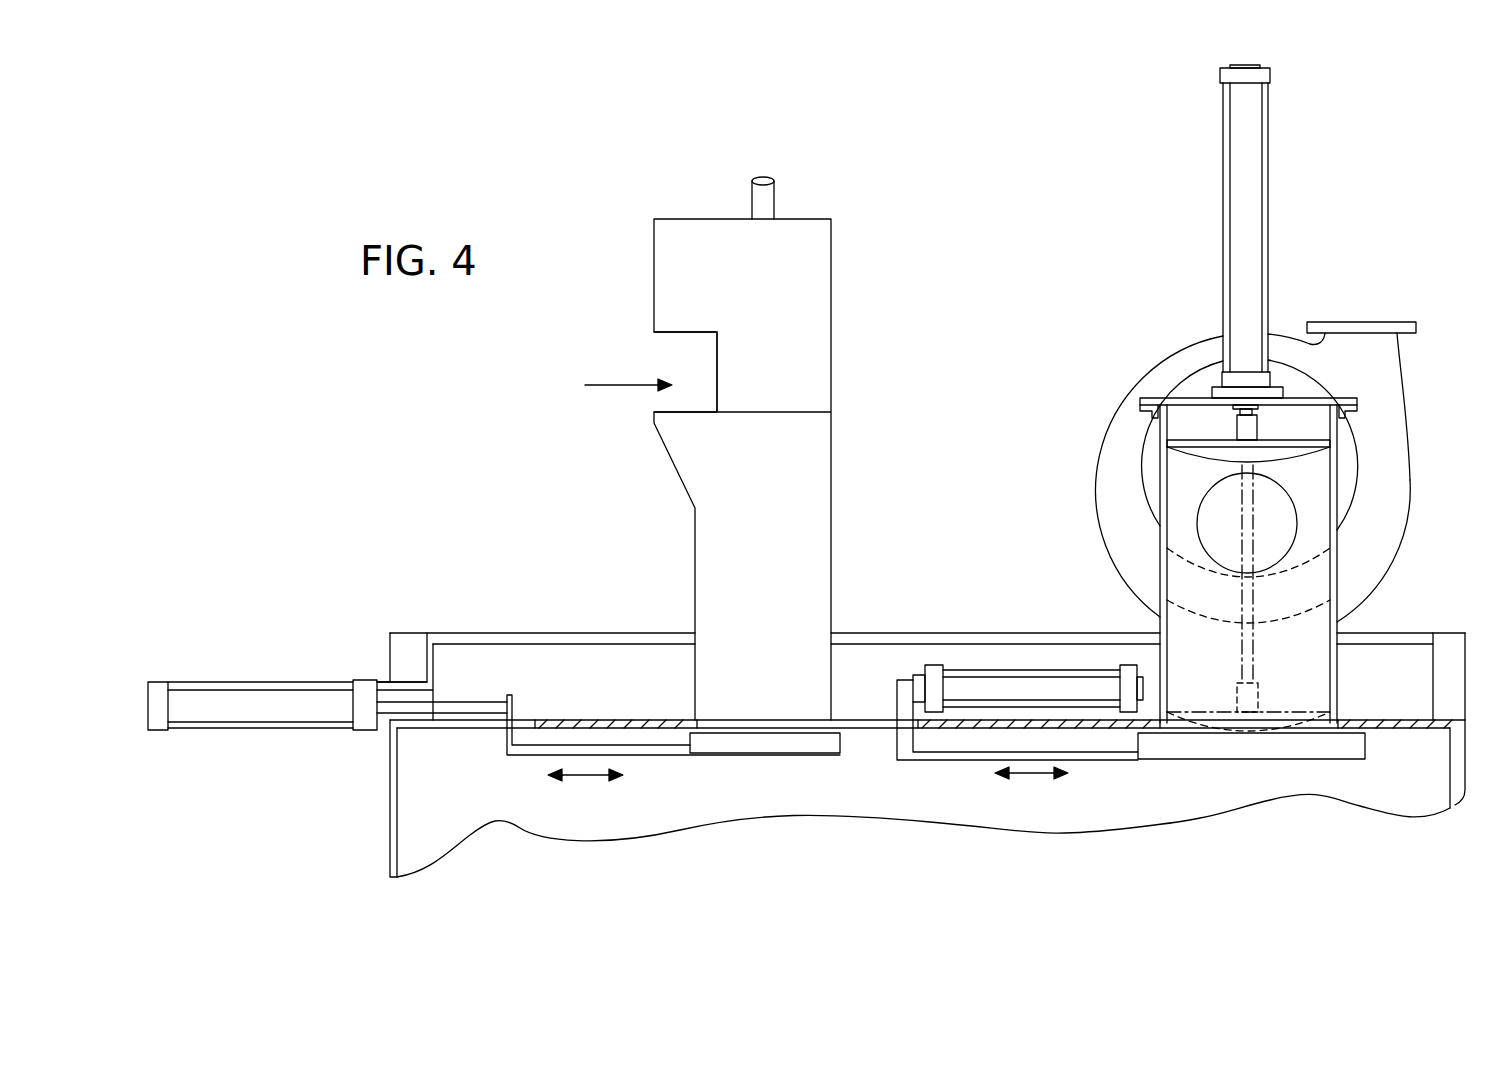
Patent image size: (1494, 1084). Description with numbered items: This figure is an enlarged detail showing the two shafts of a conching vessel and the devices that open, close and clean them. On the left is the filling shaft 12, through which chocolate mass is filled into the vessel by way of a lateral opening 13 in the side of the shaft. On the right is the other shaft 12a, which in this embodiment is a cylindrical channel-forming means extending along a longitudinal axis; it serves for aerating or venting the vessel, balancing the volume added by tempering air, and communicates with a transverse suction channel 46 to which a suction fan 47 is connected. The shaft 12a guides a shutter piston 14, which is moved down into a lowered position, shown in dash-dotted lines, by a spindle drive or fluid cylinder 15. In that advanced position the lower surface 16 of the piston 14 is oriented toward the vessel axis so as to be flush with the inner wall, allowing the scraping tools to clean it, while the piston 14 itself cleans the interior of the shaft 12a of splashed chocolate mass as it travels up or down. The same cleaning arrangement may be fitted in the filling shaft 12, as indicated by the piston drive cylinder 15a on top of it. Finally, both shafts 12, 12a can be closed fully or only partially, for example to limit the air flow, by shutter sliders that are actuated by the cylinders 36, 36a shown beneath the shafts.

The filling shaft 12 is at (832, 357).
The shaft 12a is at (1340, 612).
The lateral opening 13 is at (672, 354).
The shutter piston 14 is at (1197, 440).
The fluid cylinder 15 is at (1223, 167).
The piston drive cylinder 15a is at (774, 197).
The lower surface 16 is at (1217, 453).
The cylinder unit 36 is at (286, 682).
The cylinder 36a is at (978, 668).
The transverse suction channel 46 is at (1224, 497).
The suction fan 47 is at (1413, 397).